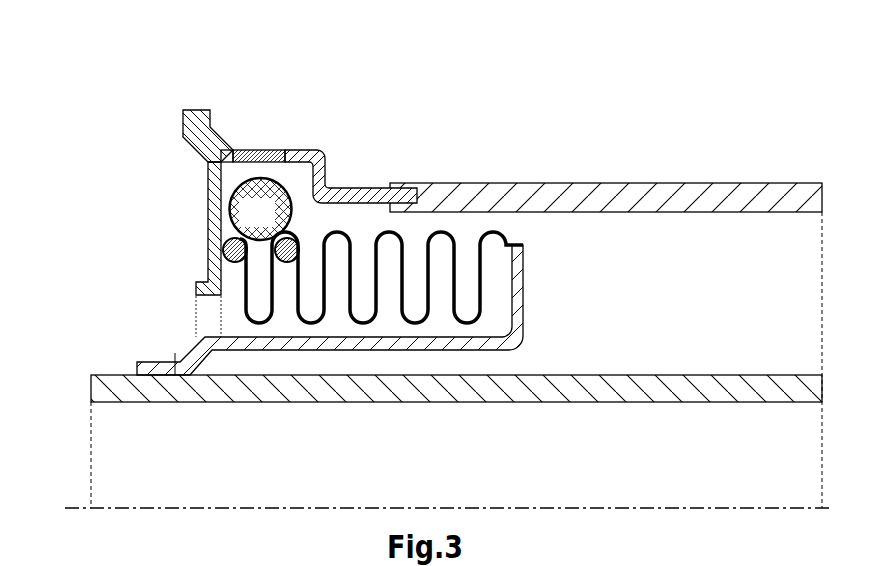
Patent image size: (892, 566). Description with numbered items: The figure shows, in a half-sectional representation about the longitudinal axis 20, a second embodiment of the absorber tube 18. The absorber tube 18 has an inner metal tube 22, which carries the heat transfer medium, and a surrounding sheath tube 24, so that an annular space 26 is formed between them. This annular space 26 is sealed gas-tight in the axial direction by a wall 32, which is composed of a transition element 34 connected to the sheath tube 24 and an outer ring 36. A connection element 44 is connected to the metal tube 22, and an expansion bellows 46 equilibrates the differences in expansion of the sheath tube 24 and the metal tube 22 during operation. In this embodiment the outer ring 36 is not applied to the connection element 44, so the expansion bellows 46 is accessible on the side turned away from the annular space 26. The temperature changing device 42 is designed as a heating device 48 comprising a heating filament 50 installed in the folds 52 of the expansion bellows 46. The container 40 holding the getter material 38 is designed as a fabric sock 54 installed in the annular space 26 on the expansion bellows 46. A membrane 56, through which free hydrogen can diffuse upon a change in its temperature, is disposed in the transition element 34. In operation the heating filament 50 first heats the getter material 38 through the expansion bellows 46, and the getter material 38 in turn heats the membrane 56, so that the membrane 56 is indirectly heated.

The absorber tube 18 is at (674, 121).
The longitudinal axis 20 is at (130, 506).
The metal tube 22 is at (653, 375).
The sheath tube 24 is at (483, 197).
The annular space 26 is at (714, 283).
The wall 32 is at (140, 108).
The transition element 34 is at (310, 148).
The outer ring 36 is at (205, 256).
The getter material 38 is at (273, 225).
The container 40 is at (255, 171).
The fabric sock 54 is at (255, 171).
The temperature changing device 42 is at (215, 244).
The heating device 48 is at (215, 244).
The heating filament 50 is at (215, 244).
The connection element 44 is at (517, 322).
The expansion bellows 46 is at (430, 224).
The folds 52 is at (285, 298).
The membrane 56 is at (265, 148).